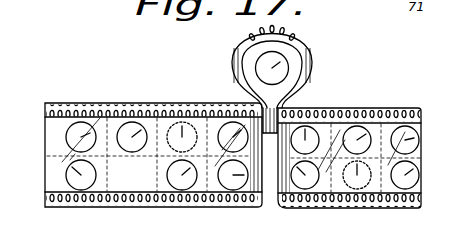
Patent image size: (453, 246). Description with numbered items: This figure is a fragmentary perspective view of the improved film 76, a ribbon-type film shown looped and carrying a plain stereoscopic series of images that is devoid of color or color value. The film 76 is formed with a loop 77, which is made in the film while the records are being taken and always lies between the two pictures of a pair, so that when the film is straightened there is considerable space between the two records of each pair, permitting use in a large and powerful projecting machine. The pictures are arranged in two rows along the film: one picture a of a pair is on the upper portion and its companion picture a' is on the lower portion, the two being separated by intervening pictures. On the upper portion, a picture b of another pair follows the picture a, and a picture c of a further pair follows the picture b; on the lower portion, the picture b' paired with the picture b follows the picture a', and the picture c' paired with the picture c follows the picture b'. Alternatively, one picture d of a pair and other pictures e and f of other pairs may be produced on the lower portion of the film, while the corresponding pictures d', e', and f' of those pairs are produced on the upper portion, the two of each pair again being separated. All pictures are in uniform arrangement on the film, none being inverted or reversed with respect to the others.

The picture a is at (110, 133).
The film 76 is at (146, 118).
The picture b is at (170, 134).
The picture c is at (204, 135).
The picture d is at (121, 179).
The picture e is at (171, 197).
The picture f is at (220, 180).
The loop 77 is at (311, 52).
The picture d' is at (321, 112).
The picture e' is at (359, 113).
The picture f' is at (405, 114).
The picture a' is at (309, 199).
The picture b' is at (364, 199).
The picture c' is at (405, 199).